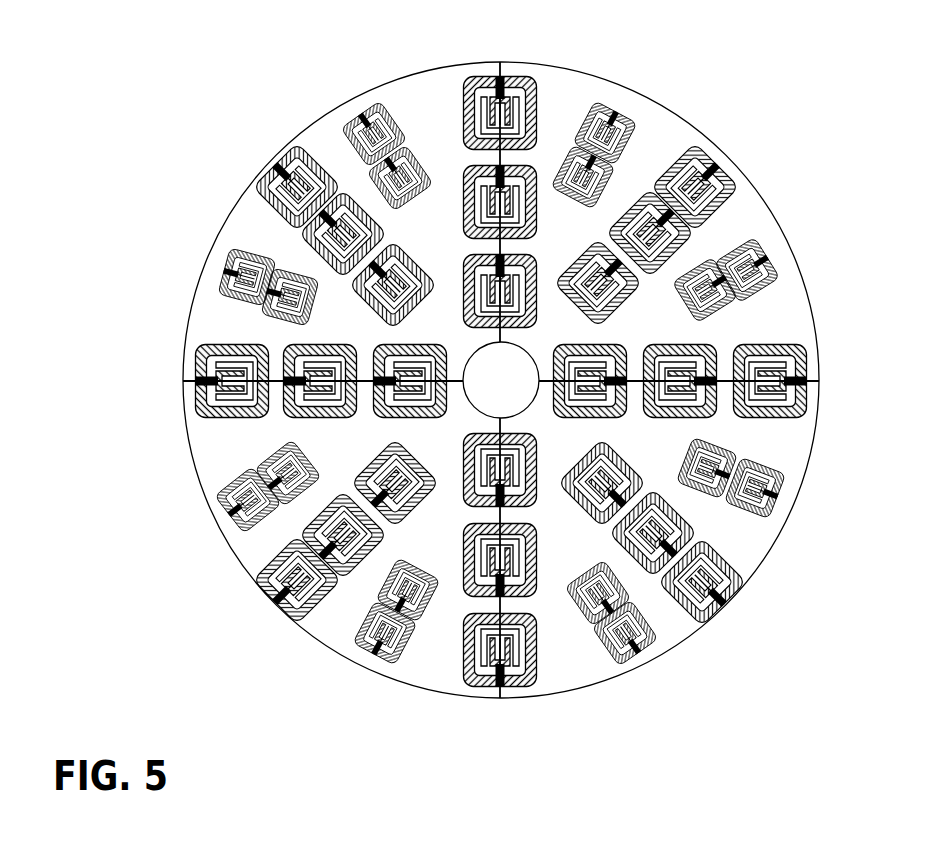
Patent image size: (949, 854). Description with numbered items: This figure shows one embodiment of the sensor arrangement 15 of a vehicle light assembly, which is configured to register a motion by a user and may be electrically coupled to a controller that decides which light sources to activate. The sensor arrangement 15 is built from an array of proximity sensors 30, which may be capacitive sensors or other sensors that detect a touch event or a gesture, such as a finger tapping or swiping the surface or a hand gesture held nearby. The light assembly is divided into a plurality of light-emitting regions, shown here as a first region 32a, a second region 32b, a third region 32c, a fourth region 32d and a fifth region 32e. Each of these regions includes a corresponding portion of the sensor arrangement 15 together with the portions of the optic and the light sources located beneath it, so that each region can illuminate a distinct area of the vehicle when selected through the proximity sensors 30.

The sensor arrangement 15 is at (742, 105).
The proximity sensor 30 is at (533, 82).
The first region 32a is at (264, 156).
The second region 32b is at (757, 162).
The third region 32c is at (722, 632).
The fourth region 32d is at (236, 572).
The fifth region 32e is at (527, 350).